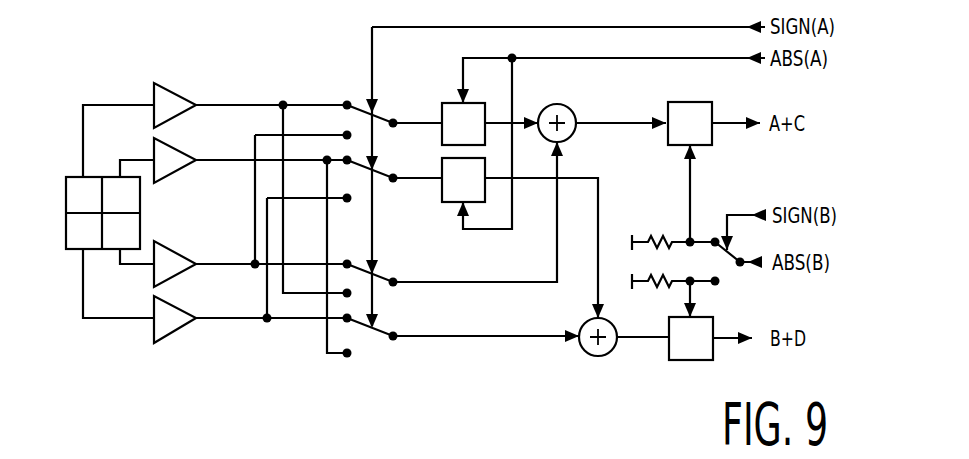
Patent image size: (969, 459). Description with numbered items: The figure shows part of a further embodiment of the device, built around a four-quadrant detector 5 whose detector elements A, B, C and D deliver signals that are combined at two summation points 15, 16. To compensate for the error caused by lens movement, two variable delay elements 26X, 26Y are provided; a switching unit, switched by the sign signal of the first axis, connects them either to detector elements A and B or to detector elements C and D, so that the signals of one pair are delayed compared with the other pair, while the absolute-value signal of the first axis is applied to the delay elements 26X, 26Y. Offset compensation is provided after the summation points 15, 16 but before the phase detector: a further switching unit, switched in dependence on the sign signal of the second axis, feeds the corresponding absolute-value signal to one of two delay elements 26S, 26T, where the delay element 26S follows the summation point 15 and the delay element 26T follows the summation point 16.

The quadrant detector array (A, B, C, D) 5 is at (72, 250).
The summation point 15 is at (572, 110).
The summation point 16 is at (584, 352).
The variable delay element 26X is at (449, 134).
The variable delay element 26Y is at (449, 190).
The delay element 26S is at (675, 134).
The delay element 26T is at (676, 349).